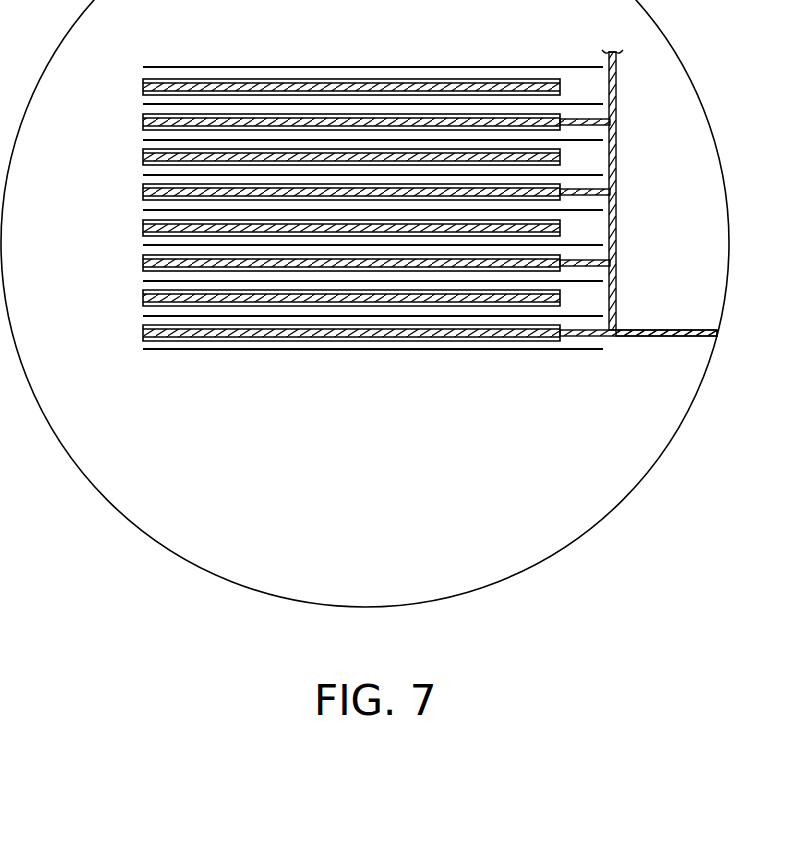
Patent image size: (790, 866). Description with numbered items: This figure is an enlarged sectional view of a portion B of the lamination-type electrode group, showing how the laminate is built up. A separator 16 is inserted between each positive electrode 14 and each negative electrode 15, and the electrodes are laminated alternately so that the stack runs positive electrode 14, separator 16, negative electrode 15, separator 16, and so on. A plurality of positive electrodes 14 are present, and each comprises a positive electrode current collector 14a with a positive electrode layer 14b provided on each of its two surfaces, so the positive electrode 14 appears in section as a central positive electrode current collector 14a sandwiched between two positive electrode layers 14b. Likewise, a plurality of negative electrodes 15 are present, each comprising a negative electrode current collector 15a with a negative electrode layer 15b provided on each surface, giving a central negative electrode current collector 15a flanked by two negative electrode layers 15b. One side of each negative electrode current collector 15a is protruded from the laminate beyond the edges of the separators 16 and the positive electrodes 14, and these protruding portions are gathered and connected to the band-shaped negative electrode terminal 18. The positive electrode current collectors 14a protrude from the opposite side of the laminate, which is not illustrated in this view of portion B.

The positive electrode 14 is at (287, 217).
The positive electrode current collector 14a is at (143, 297).
The positive electrode layer 14b is at (145, 286).
The negative electrode 15 is at (390, 243).
The negative electrode current collector 15a is at (588, 118).
The negative electrode layer 15b is at (147, 327).
The separator 16 is at (431, 66).
The negative electrode terminal 18 is at (663, 337).
The portion B is at (613, 510).